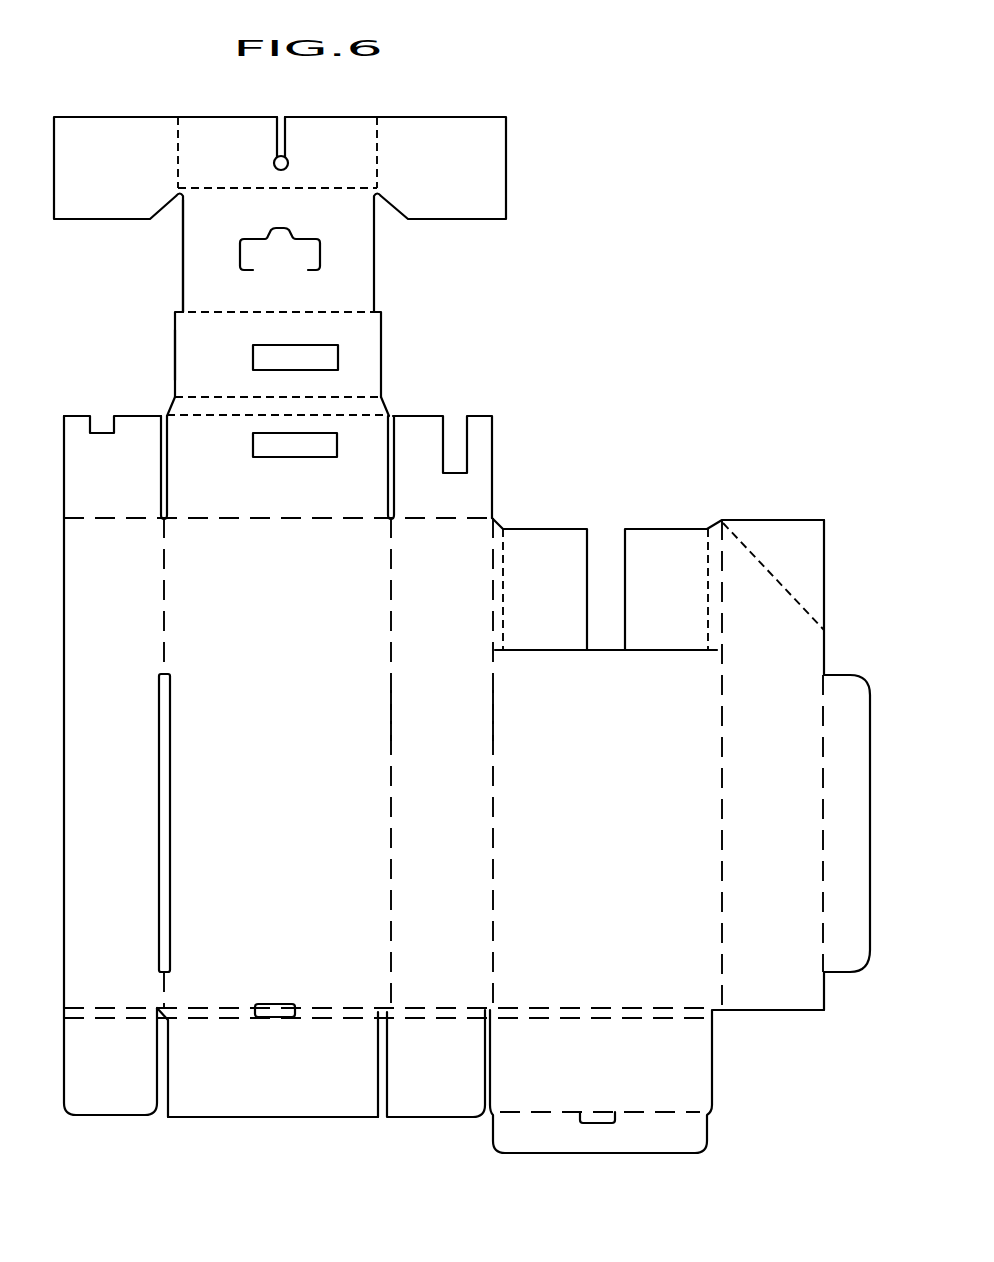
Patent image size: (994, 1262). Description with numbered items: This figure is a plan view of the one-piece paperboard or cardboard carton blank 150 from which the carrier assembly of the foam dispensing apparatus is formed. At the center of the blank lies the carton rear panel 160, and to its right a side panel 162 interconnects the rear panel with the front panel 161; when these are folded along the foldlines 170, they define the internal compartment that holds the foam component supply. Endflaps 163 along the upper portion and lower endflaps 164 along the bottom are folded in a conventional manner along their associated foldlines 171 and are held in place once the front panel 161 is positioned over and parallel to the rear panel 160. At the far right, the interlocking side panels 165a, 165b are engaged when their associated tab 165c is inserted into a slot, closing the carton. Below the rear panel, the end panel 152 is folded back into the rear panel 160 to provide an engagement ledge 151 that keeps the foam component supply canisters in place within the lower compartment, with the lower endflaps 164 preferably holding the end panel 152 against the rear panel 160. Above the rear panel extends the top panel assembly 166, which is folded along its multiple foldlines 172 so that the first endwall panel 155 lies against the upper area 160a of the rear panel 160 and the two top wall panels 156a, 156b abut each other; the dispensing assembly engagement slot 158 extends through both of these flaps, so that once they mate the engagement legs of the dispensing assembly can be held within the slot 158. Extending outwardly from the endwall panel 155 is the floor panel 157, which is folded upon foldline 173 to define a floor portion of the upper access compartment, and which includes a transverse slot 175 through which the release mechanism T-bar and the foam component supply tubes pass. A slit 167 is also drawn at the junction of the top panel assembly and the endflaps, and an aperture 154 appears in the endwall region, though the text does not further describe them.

The carton blank 150 is at (62, 547).
The engagement ledge 151 is at (218, 1118).
The end panel 152 is at (262, 1105).
The hanger aperture 154 is at (320, 253).
The first endwall panel 155 is at (184, 255).
The top wall panel 156a is at (366, 330).
The top wall panel 156b is at (368, 494).
The floor panel 157 is at (360, 138).
The dispensing assembly engagement slot 158 is at (337, 443).
The carton rear panel 160 is at (283, 878).
The upper area of the carton rear panel 160a is at (292, 644).
The front panel 161 is at (612, 792).
The side panel 162 is at (457, 797).
The endflaps 163 is at (117, 492).
The lower endflaps 164 is at (122, 1090).
The interlocking side panel 165a is at (137, 793).
The interlocking side panel 165b is at (778, 650).
The tab 165c is at (855, 821).
The top panel assembly 166 is at (186, 345).
The slit 167 is at (183, 442).
The foldlines 170 is at (491, 730).
The foldlines 171 is at (128, 1005).
The foldlines 172 is at (267, 312).
The foldline 173 is at (241, 188).
The transverse slot 175 is at (279, 124).